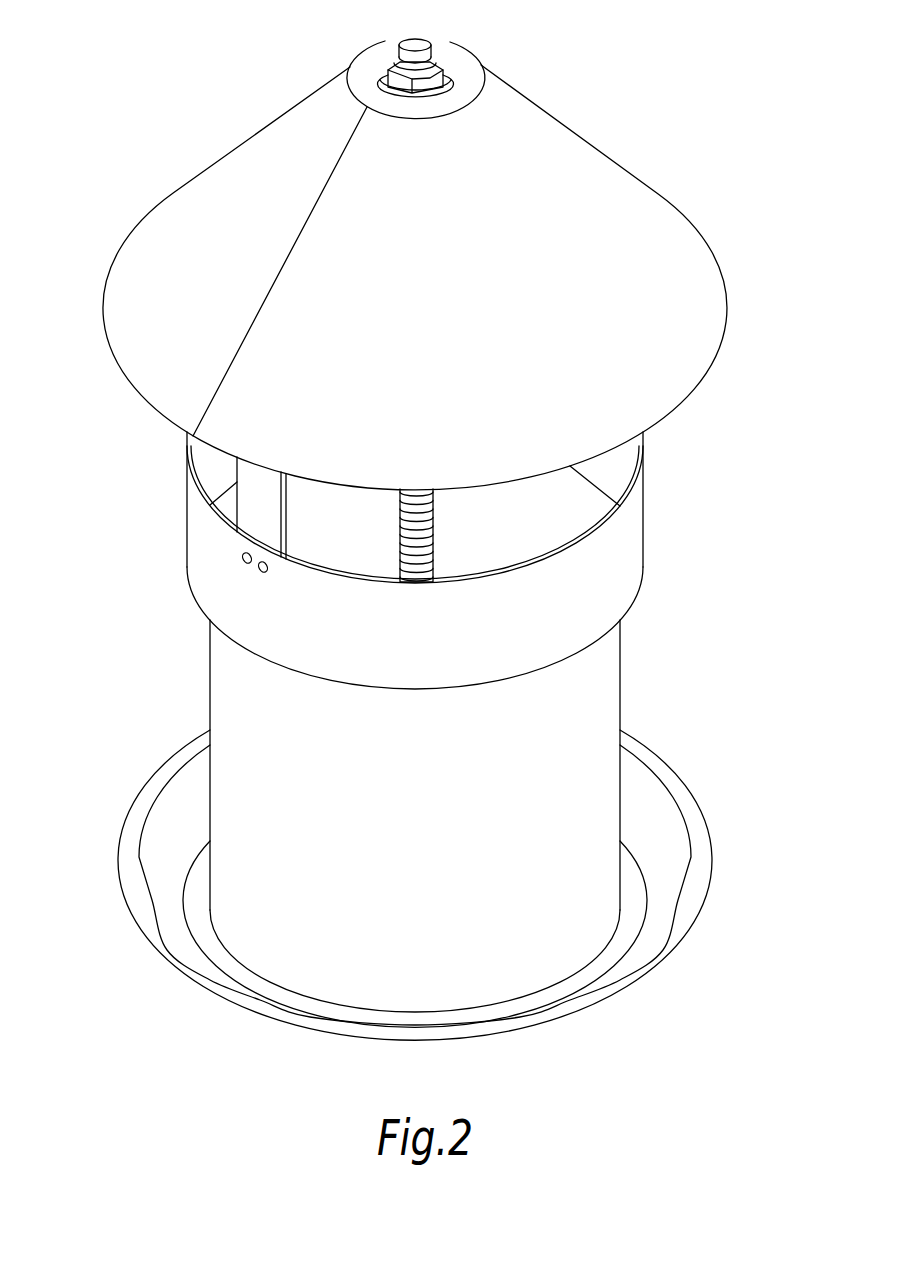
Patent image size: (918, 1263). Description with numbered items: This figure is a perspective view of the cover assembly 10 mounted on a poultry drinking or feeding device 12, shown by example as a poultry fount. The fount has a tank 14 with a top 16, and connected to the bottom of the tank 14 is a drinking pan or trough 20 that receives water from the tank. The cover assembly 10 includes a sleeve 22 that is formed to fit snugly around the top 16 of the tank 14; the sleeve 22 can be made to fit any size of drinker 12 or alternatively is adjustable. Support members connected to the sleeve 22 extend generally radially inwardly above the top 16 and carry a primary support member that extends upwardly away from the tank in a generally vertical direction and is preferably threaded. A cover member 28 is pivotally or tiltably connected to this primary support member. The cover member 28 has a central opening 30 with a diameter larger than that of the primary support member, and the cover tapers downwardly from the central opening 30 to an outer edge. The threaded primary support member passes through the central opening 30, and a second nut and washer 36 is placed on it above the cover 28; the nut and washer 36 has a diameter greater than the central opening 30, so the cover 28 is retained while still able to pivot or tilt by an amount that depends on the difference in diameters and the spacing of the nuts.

The cover assembly 10 is at (597, 83).
The poultry drinking or feeding device 12 is at (460, 816).
The tank 14 is at (443, 810).
The top 16 is at (625, 608).
The drinking pan or trough 20 is at (707, 822).
The sleeve 22 is at (645, 523).
The cover member 28 is at (390, 352).
The central opening 30 is at (463, 75).
The second nut and washer 36 is at (399, 50).